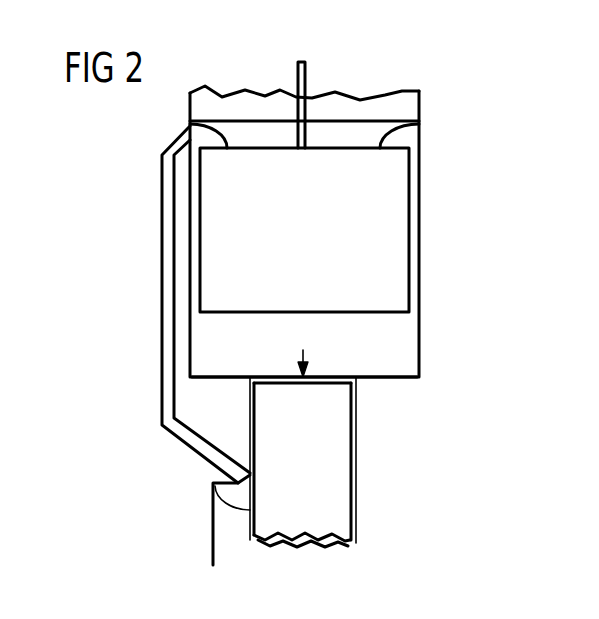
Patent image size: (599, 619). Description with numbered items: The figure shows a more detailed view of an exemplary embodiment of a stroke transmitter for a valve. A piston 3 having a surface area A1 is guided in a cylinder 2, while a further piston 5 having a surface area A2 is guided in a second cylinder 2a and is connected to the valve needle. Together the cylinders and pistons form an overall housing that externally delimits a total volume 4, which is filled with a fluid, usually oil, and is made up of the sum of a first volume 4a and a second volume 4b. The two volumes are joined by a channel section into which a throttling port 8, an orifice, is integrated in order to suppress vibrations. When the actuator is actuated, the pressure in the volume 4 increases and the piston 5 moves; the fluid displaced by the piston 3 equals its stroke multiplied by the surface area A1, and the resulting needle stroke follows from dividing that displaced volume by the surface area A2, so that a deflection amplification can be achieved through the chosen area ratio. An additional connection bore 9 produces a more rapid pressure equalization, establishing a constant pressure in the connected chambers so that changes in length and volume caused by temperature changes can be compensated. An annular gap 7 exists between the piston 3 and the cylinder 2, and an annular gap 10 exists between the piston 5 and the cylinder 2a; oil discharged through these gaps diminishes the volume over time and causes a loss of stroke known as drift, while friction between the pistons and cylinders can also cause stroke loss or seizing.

The cylinder 2 is at (419, 190).
The second cylinder 2a is at (358, 449).
The piston 3 is at (398, 237).
The volume 4 is at (487, 323).
The first volume 4a is at (410, 348).
The second volume 4b is at (345, 380).
The further piston 5 is at (342, 498).
The annular gap 7 is at (194, 226).
The throttling port 8 is at (307, 383).
The connection bore 9 is at (166, 288).
The annular gap 10 is at (250, 432).
The surface area A1 is at (313, 314).
The surface area A2 is at (297, 380).